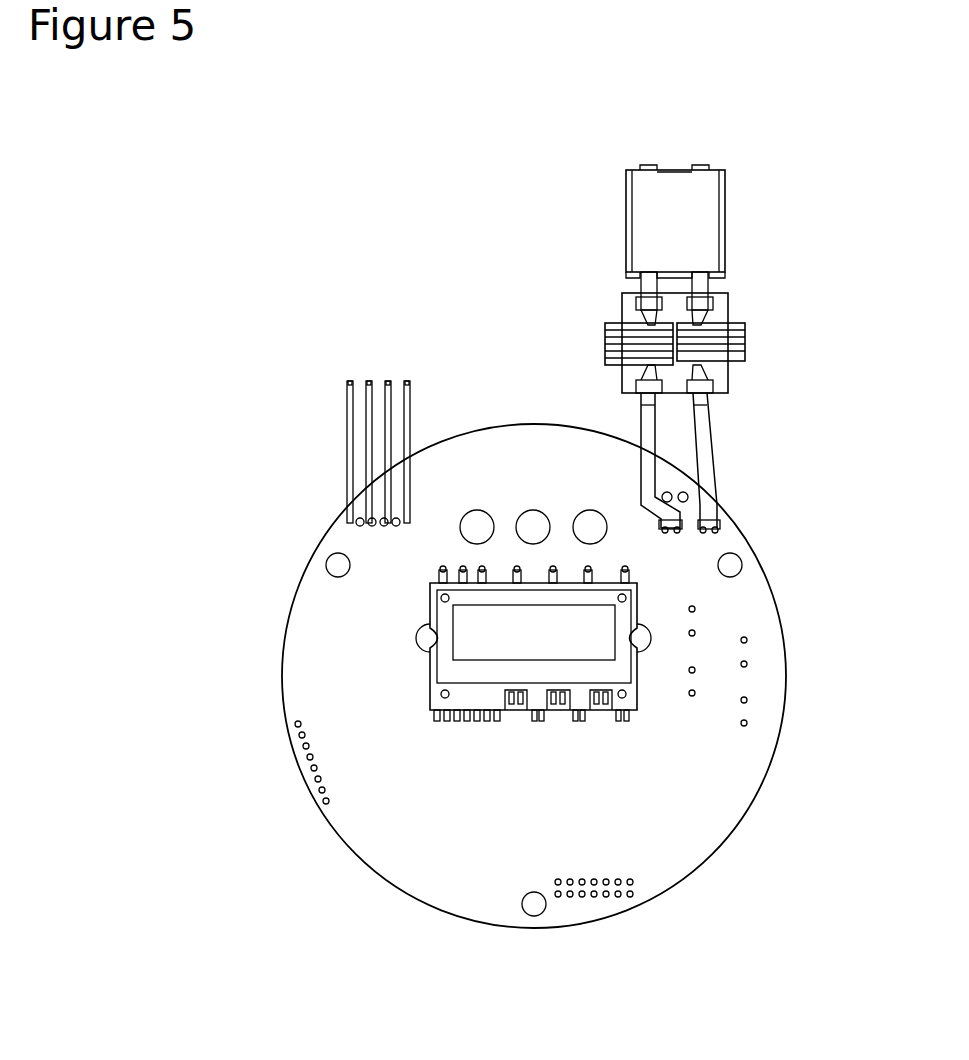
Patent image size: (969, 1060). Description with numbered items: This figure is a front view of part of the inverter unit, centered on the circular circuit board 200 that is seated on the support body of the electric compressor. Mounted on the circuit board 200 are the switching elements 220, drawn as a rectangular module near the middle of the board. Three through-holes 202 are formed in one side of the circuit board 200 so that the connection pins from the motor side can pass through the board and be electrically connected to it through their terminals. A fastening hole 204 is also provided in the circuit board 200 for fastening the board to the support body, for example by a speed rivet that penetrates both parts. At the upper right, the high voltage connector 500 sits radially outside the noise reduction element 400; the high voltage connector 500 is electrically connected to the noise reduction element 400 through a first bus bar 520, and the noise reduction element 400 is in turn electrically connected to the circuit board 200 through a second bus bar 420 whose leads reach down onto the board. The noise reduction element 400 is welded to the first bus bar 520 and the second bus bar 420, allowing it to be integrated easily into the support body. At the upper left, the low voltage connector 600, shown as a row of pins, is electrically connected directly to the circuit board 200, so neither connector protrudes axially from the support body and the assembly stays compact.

The circuit board 200 is at (704, 807).
The through-holes 202 is at (476, 525).
The fastening hole 204 is at (328, 568).
The switching elements 220 is at (478, 690).
The noise reduction element 400 is at (750, 341).
The second bus bar 420 is at (708, 483).
The high voltage connector 500 is at (730, 213).
The first bus bar 520 is at (712, 287).
The low voltage connector 600 is at (345, 432).